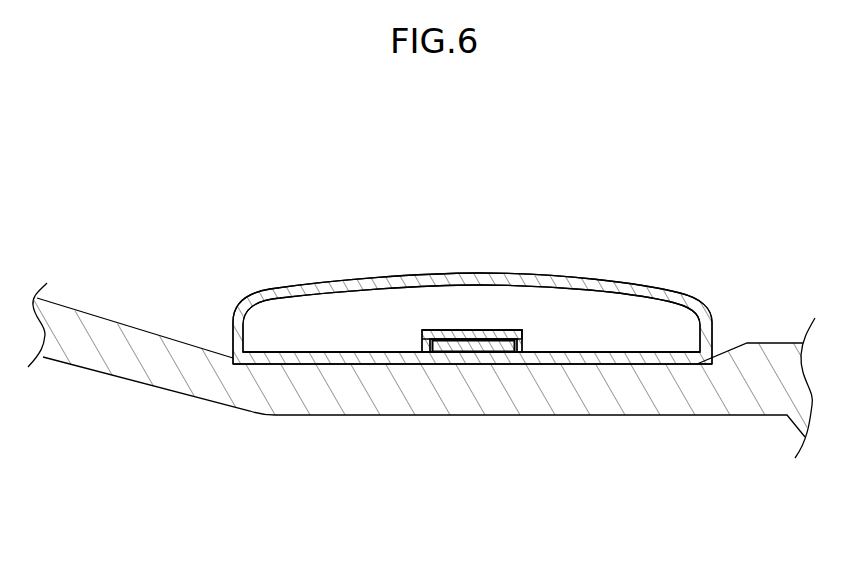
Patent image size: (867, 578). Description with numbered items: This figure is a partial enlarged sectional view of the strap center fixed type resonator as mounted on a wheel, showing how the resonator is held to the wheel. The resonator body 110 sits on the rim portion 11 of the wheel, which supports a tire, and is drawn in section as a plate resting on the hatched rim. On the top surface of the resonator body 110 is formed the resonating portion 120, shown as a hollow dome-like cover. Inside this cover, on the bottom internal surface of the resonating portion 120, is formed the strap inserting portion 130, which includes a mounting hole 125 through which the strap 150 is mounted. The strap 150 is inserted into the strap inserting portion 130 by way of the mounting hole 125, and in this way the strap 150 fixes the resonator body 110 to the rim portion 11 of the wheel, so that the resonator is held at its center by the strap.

The rim portion 11 is at (395, 400).
The resonator body 110 is at (573, 364).
The resonating portion 120 is at (598, 284).
The mounting hole 125 is at (431, 333).
The strap inserting portion 130 is at (492, 330).
The strap 150 is at (467, 349).